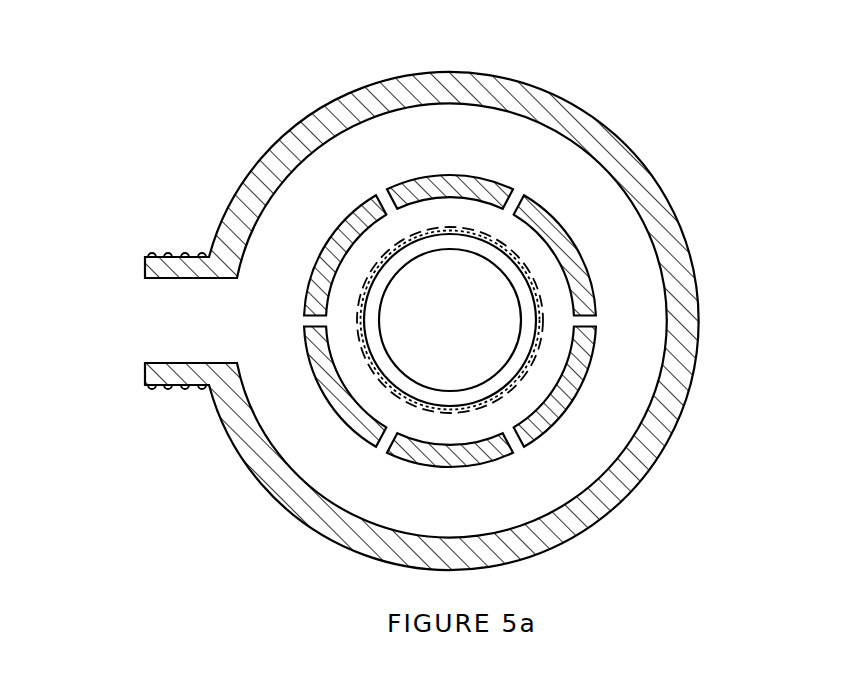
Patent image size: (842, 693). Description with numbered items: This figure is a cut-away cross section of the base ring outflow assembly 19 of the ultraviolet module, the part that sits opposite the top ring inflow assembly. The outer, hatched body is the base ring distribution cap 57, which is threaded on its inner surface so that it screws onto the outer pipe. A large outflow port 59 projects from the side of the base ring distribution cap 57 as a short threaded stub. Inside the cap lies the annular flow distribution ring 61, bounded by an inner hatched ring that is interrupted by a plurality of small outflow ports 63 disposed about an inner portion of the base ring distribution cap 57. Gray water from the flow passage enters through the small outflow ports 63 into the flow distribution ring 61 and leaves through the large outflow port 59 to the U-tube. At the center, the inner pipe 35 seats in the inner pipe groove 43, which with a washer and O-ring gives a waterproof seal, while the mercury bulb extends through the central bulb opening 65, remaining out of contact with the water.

The base ring outflow assembly 19 is at (387, 293).
The base ring distribution cap 57 is at (641, 154).
The large outflow port 59 is at (148, 320).
The flow distribution ring 61 is at (434, 321).
The small outflow ports 63 is at (378, 198).
The inner pipe groove 43 is at (497, 406).
The inner pipe 35 is at (372, 318).
The bulb opening 65 is at (517, 309).